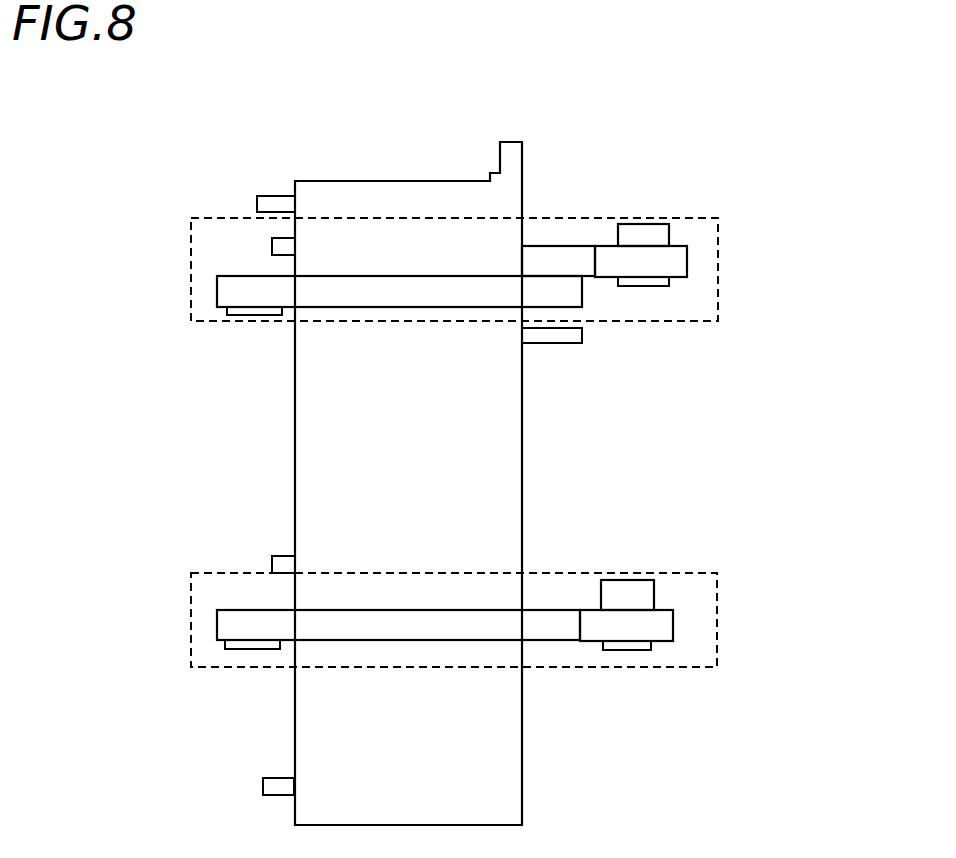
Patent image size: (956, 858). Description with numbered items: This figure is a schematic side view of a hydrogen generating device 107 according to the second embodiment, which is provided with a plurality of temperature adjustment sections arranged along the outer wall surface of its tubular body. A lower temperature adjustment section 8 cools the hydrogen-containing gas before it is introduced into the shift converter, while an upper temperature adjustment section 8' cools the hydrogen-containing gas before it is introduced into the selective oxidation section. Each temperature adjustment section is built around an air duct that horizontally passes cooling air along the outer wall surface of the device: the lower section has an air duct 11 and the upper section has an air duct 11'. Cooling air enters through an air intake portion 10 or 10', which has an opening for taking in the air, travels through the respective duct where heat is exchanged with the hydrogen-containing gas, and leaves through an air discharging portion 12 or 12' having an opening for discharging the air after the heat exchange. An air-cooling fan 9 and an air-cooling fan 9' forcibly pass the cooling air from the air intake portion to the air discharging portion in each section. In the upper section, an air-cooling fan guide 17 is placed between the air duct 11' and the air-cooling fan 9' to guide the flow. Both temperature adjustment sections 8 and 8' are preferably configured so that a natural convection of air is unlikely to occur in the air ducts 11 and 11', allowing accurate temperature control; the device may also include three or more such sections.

The hydrogen generating device 107 is at (88, 178).
The temperature adjustment section 8 is at (502, 620).
The temperature adjustment section 8' is at (508, 269).
The air-cooling fan 9 is at (652, 562).
The air-cooling fan 9' is at (664, 205).
The air intake portion 10 is at (638, 689).
The air intake portion 10' is at (651, 332).
The air duct 11 is at (422, 537).
The air duct 11' is at (426, 195).
The air discharging portion 12 is at (231, 708).
The air discharging portion 12' is at (232, 371).
The air-cooling fan guide 17 is at (553, 265).